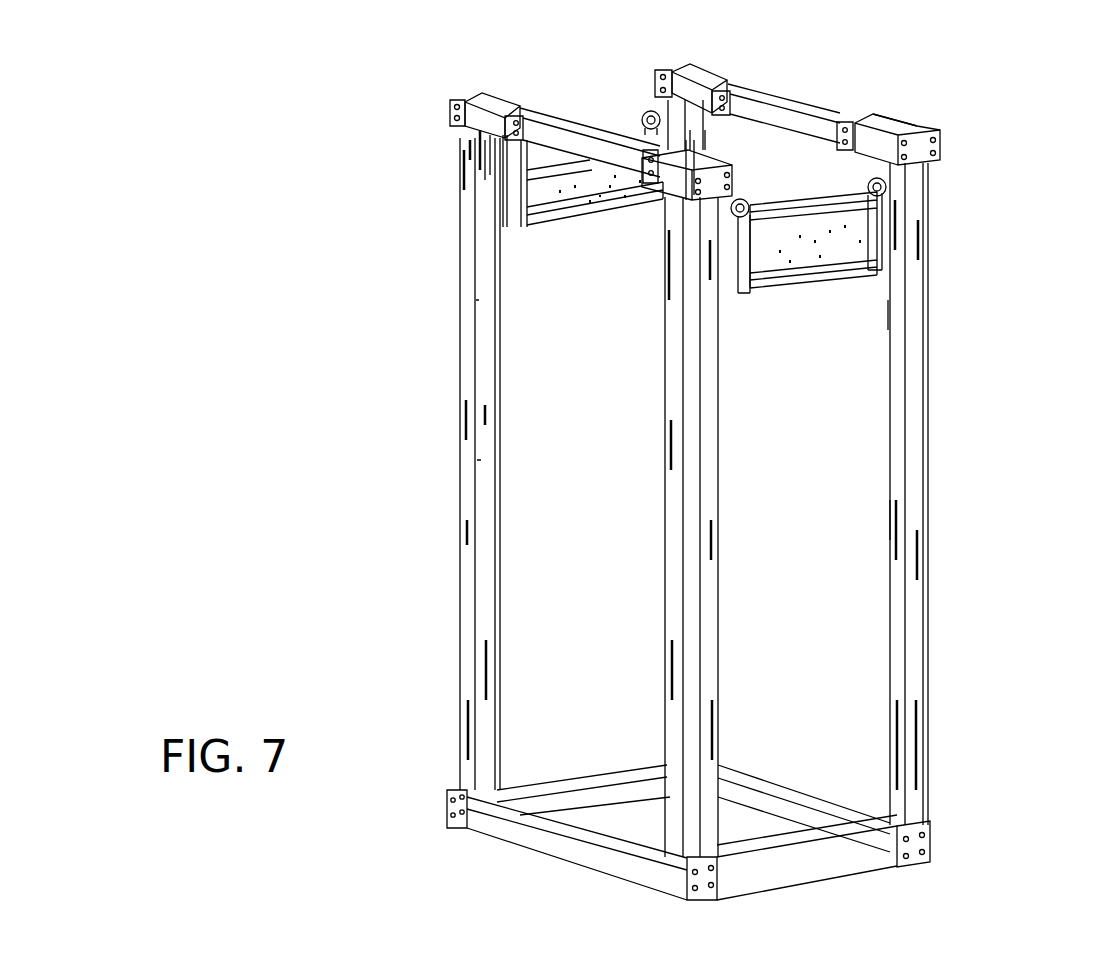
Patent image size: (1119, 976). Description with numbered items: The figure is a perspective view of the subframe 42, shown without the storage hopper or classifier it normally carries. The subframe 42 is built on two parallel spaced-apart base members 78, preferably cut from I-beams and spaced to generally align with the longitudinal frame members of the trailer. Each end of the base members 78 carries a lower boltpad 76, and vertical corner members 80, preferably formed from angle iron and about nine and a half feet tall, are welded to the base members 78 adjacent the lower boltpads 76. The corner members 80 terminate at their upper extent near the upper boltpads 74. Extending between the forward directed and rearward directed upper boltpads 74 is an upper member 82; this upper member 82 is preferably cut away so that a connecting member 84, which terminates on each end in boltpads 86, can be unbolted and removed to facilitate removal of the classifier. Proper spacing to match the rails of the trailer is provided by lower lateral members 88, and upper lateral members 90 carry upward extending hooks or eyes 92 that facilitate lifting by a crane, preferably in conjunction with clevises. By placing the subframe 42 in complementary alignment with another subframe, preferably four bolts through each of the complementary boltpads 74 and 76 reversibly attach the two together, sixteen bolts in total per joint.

The subframe 42 is at (962, 316).
The upper boltpads 74 is at (452, 112).
The lower boltpads 76 is at (447, 803).
The base members 78 is at (803, 793).
The vertical corner members 80 is at (460, 410).
The upper member 82 is at (913, 128).
The connecting member 84 is at (583, 131).
The boltpads 86 is at (547, 111).
The lower lateral members 88 is at (577, 778).
The upper lateral members 90 is at (603, 192).
The eyes 92 is at (646, 112).